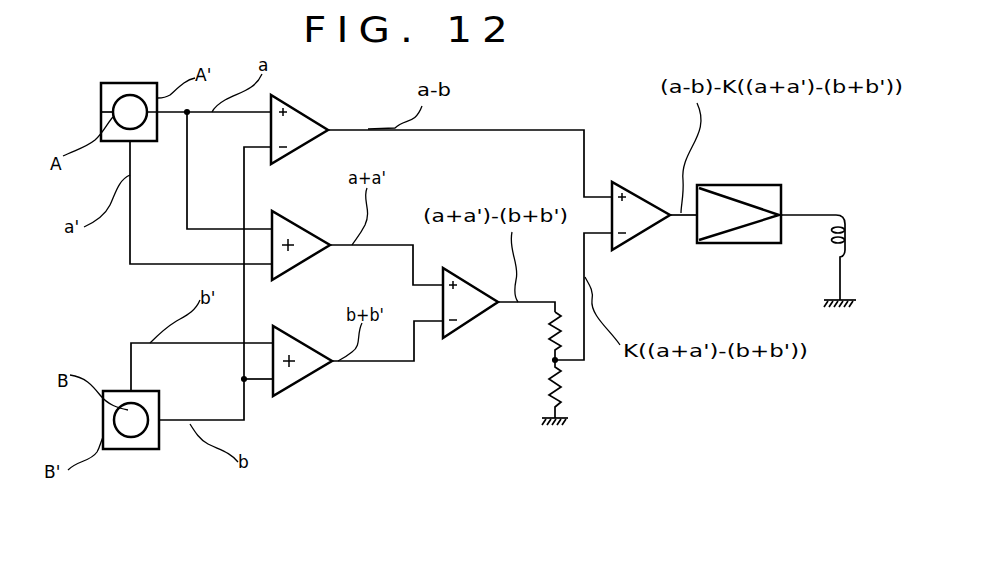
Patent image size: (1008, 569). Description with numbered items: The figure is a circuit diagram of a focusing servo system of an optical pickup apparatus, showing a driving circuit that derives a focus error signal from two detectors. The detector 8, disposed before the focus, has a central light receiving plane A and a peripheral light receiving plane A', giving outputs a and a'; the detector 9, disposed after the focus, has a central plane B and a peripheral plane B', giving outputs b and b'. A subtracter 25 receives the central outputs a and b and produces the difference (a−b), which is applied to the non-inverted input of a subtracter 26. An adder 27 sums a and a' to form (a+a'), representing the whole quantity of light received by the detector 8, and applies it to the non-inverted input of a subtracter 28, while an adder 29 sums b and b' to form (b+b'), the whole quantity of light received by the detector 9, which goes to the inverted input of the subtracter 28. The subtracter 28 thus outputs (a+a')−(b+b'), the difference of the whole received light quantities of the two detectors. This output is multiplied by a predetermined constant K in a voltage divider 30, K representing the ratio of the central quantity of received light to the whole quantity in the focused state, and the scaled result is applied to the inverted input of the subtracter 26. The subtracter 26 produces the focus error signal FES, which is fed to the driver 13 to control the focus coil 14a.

The detector 8 is at (140, 83).
The detector 9 is at (143, 452).
The subtracter 25 is at (304, 113).
The adder 27 is at (295, 220).
The adder 29 is at (298, 383).
The subtracter 28 is at (484, 317).
The voltage divider 30 is at (545, 368).
The subtracter 26 is at (642, 197).
The driver 13 is at (760, 185).
The focus coil 14a is at (836, 243).